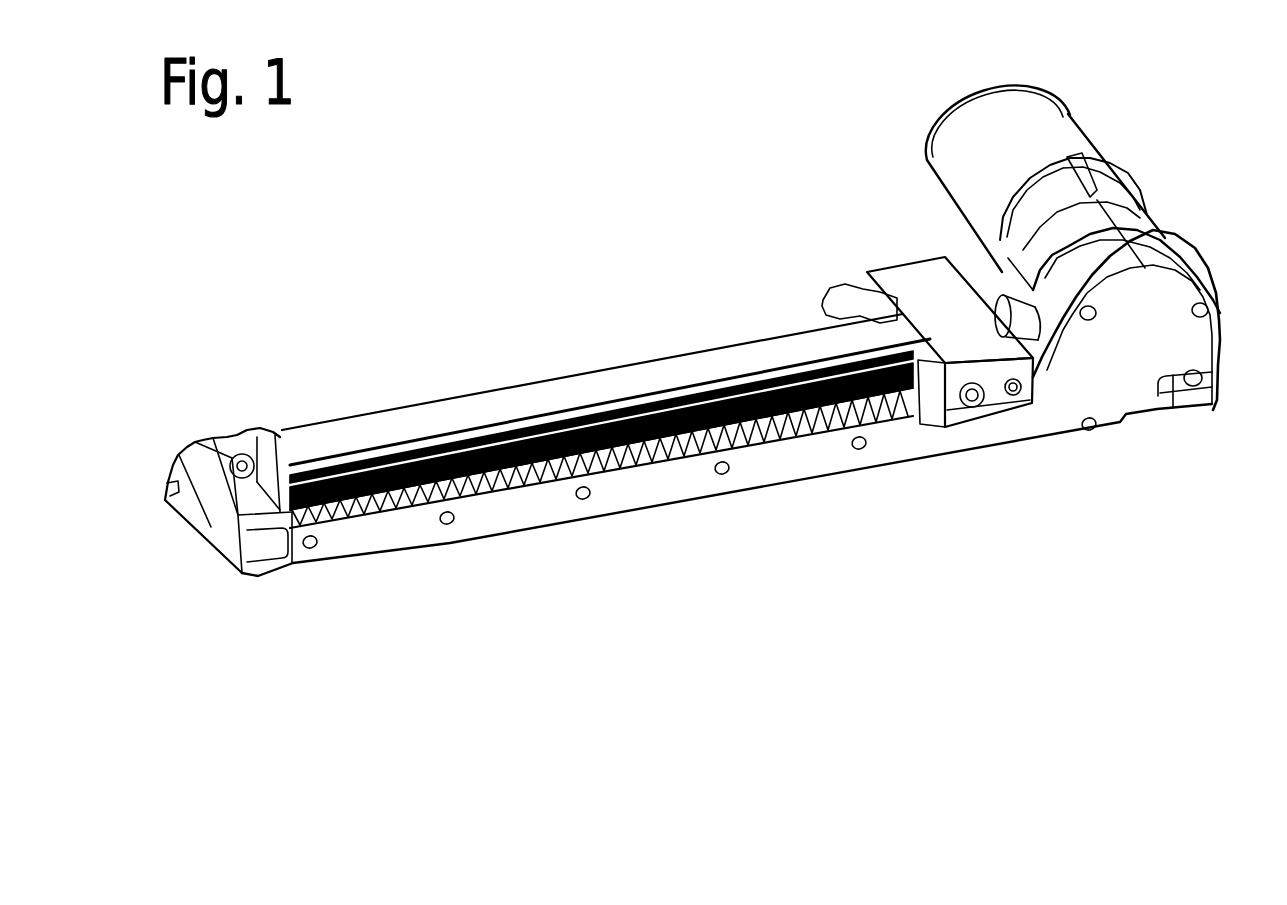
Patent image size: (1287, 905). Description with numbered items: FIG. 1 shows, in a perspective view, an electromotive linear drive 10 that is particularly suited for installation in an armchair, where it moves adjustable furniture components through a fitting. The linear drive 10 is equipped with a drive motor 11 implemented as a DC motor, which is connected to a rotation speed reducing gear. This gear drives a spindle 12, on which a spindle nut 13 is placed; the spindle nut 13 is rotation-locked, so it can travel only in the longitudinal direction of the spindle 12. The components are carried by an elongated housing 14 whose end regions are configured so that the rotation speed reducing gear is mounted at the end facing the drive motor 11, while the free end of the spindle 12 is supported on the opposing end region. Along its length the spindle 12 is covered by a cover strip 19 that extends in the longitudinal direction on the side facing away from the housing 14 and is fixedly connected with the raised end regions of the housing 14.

The electromotive linear drive 10 is at (652, 346).
The drive motor 11 is at (985, 162).
The spindle 12 is at (443, 465).
The spindle nut 13 is at (945, 303).
The housing 14 is at (765, 465).
The cover strip 19 is at (543, 403).